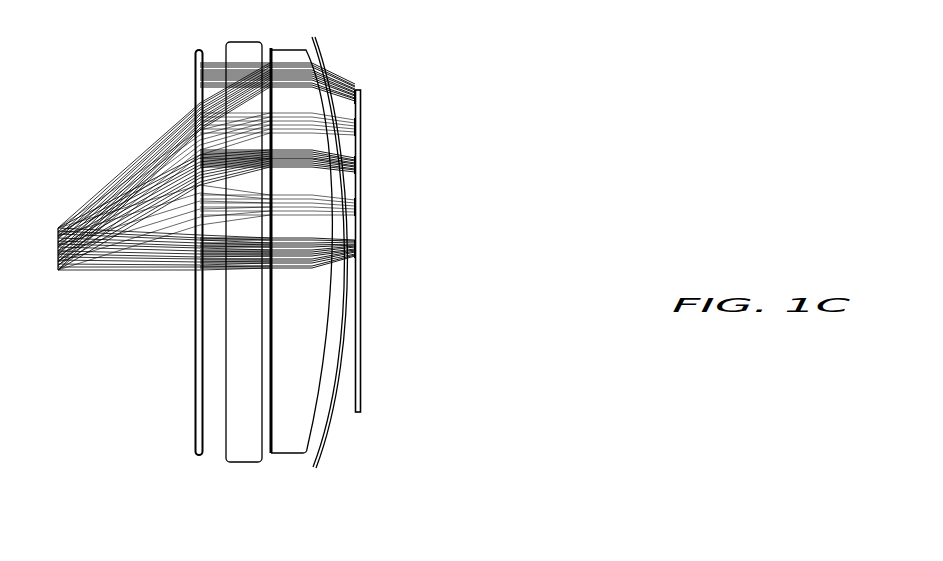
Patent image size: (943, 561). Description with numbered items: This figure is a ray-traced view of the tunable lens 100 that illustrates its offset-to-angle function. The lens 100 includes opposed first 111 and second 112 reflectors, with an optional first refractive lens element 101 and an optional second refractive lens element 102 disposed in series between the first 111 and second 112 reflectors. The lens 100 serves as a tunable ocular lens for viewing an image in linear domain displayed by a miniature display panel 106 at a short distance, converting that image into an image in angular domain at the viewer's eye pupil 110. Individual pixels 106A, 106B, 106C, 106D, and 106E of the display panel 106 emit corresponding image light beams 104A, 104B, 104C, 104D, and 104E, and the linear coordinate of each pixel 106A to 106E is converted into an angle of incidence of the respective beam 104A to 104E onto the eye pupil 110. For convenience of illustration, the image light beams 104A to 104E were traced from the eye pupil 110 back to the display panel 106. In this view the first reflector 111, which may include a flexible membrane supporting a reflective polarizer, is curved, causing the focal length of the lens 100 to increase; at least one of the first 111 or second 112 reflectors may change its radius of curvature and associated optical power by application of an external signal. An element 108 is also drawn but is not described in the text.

The lens 100 is at (524, 80).
The first refractive lens element 101 is at (318, 308).
The second refractive lens element 102 is at (261, 308).
The image light beam 104A is at (110, 228).
The image light beam 104B is at (170, 184).
The image light beam 104C is at (137, 218).
The image light beam 104D is at (186, 255).
The image light beam 104E is at (100, 272).
The display panel 106 is at (363, 333).
The pixel 106A is at (362, 93).
The pixel 106B is at (362, 125).
The pixel 106C is at (362, 165).
The pixel 106D is at (362, 205).
The pixel 106E is at (362, 247).
The aperture stop 108 is at (271, 50).
The eye pupil 110 is at (57, 229).
The first reflector 111 is at (325, 446).
The second reflector 112 is at (205, 455).